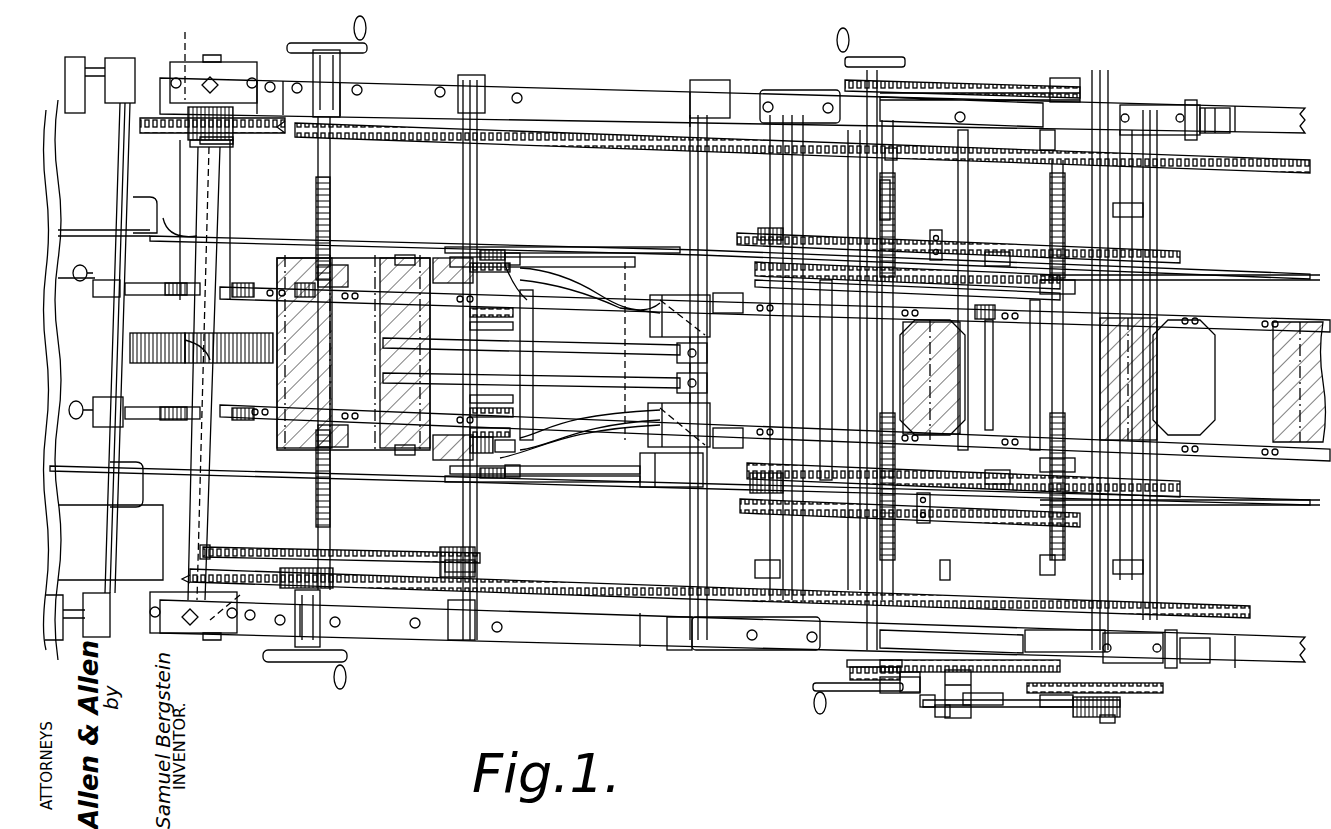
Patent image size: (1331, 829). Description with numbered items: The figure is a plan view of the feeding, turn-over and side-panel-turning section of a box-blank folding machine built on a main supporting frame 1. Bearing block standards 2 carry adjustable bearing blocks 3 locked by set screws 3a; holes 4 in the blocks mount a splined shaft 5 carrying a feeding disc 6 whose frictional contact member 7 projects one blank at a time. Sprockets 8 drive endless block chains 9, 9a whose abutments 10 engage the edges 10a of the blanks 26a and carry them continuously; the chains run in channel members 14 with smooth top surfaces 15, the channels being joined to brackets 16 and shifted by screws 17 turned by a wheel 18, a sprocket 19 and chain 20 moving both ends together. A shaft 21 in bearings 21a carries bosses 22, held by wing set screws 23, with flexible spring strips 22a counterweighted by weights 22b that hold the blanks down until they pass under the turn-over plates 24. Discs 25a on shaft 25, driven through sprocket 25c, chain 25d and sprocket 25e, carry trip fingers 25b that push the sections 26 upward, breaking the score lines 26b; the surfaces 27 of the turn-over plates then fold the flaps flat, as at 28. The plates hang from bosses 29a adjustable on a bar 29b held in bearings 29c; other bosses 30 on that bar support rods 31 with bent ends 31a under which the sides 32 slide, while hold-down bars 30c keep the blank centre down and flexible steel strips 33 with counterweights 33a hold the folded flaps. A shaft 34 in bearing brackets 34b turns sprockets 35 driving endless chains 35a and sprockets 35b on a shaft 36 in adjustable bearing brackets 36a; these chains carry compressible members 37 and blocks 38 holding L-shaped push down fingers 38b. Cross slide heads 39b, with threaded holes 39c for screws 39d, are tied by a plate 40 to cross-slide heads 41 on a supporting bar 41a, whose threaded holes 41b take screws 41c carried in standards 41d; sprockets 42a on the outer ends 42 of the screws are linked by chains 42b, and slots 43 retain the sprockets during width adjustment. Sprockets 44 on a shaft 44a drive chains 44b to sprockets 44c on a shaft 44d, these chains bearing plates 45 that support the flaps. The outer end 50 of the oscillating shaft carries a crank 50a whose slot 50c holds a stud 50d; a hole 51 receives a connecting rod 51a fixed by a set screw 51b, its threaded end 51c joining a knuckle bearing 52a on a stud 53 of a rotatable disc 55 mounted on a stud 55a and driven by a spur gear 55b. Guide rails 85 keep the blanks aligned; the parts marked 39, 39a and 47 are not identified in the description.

The main supporting frame 1 is at (560, 92).
The bearing block standards 2 is at (258, 80).
The bearing blocks 3 is at (235, 65).
The set screws 3a is at (212, 80).
The holes 4 is at (215, 316).
The splined shaft 5 is at (200, 585).
The feeding disc 6 is at (140, 340).
The frictional contact member 7 is at (275, 352).
The sprockets 8 is at (238, 283).
The endless block chain 9 is at (970, 440).
The endless block chain 9a is at (265, 287).
The abutments 10 is at (270, 287).
The edges of the blanks 10a is at (285, 325).
The channel members 14 is at (478, 405).
The top surfaces of the channels 15 is at (465, 315).
The brackets 16 is at (185, 375).
The screws 17 is at (335, 190).
The wheel 18 is at (367, 50).
The sprocket 19 is at (335, 140).
The chain 20 is at (445, 145).
The shaft 21 is at (110, 560).
The bearings 21a is at (125, 70).
The bosses 22 is at (105, 290).
The flexible spring strips 22a is at (165, 283).
The weights 22b is at (400, 255).
The wing set screws 23 is at (80, 280).
The turn-over plates 24 is at (560, 290).
The shaft 25 is at (487, 247).
The discs 25a is at (497, 250).
The trip fingers 25b is at (515, 255).
The sprocket 25c is at (500, 565).
The chain 25d is at (278, 555).
The sprocket 25e is at (235, 548).
The sections of the blanks 26 is at (395, 258).
The blanks 26a is at (801, 352).
The score lines 26b is at (430, 325).
The surfaces of the turn-over plates 27 is at (535, 300).
The position of turned-down flaps 28 is at (1057, 380).
The bosses 29a is at (650, 295).
The bar 29b is at (690, 183).
The bearings 29c is at (700, 85).
The bosses 30 is at (705, 260).
The hold-down bars 30c is at (575, 365).
The rods 31 is at (575, 262).
The bent ends 31a is at (450, 258).
The sides of the blank 32 is at (385, 258).
The flexible steel strips 33 is at (713, 298).
The counterweights 33a is at (735, 420).
The shaft 34 is at (790, 580).
The bearing brackets 34b is at (795, 100).
The sprockets 35 is at (800, 230).
The endless chains 35a is at (990, 250).
The sprockets 35b is at (1175, 275).
The shaft 36 is at (1150, 590).
The adjustable bearing brackets 36a is at (1150, 663).
The compressible members 37 is at (940, 245).
The blocks 38 is at (1052, 260).
The L-shaped push down fingers 38b is at (990, 270).
The shaft 39 is at (875, 125).
The bar 39a is at (905, 135).
The cross slide heads 39b is at (830, 420).
The threaded holes 39c is at (880, 220).
The screws 39d is at (880, 190).
The plate 40 is at (510, 420).
The cross-slide heads 41 is at (1075, 440).
The cross-slide supporting bar 41a is at (1120, 125).
The threaded holes 41b is at (990, 430).
The screws 41c is at (1050, 143).
The standards 41d is at (1100, 100).
The outer ends of the screws 42 is at (890, 62).
The sprockets 42a is at (905, 80).
The chains 42b is at (895, 695).
The slots 43 is at (855, 260).
The sprockets 44 is at (775, 245).
The shaft 44a is at (760, 570).
The chains 44b is at (895, 150).
The sprockets 44c is at (1135, 240).
The shaft 44d is at (1165, 210).
The plates 45 is at (468, 418).
The block 47 is at (940, 570).
The outer end of the oscillating shaft 50 is at (905, 705).
The crank 50a is at (965, 685).
The slot 50c is at (925, 705).
The stud 50d is at (960, 660).
The hole 51 is at (950, 720).
The connecting rod 51a is at (985, 708).
The set screw 51b is at (935, 715).
The threaded end 51c is at (1063, 712).
The knuckle bearing 52a is at (1090, 718).
The stud 53 is at (1110, 718).
The rotatable disc 55 is at (1115, 710).
The stud 55a is at (1080, 650).
The spur gear 55b is at (1130, 693).
The guide rails 85 is at (250, 235).